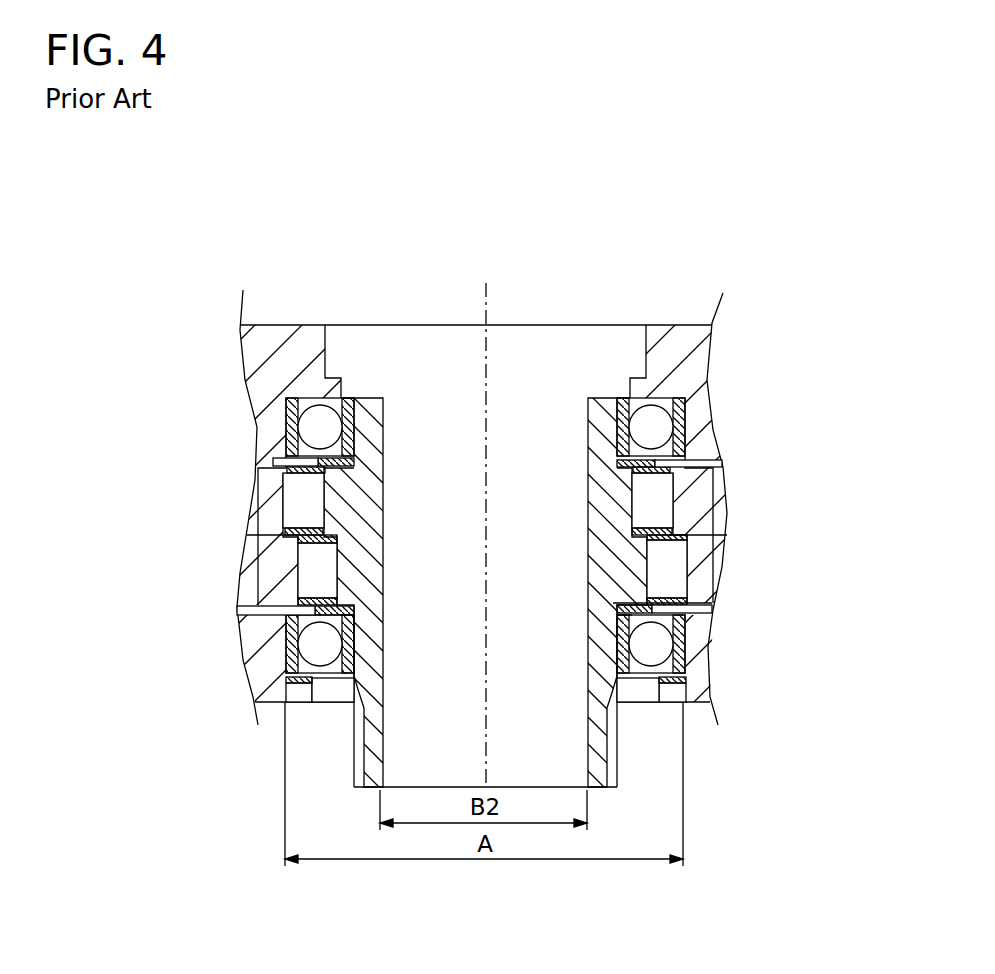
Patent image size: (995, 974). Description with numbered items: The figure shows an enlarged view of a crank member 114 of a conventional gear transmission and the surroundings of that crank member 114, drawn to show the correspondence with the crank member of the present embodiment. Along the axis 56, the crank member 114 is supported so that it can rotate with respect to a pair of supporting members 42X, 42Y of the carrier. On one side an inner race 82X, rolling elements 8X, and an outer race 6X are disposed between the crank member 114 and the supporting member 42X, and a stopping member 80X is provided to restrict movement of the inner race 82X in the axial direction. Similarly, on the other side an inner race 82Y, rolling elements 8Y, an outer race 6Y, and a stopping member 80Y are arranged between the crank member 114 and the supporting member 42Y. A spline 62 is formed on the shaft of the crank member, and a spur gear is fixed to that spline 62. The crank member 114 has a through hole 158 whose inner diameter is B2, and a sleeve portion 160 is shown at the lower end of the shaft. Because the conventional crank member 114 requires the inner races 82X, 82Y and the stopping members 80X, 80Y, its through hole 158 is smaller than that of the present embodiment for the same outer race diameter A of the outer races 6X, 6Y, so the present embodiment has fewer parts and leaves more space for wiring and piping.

The crank member 114 is at (563, 303).
The rotation axis 56 is at (484, 523).
The stopping member 80X is at (288, 425).
The stopping member 80Y is at (273, 610).
The inner race 82X is at (625, 398).
The inner race 82Y is at (623, 625).
The rolling elements 8X is at (542, 419).
The rolling elements 8Y is at (549, 651).
The outer race 6X is at (678, 425).
The outer race 6Y is at (675, 663).
The supporting member 42X is at (700, 452).
The supporting member 42Y is at (697, 690).
The spline 62 is at (592, 757).
The sleeve 160 is at (612, 752).
The through hole 158 is at (587, 738).